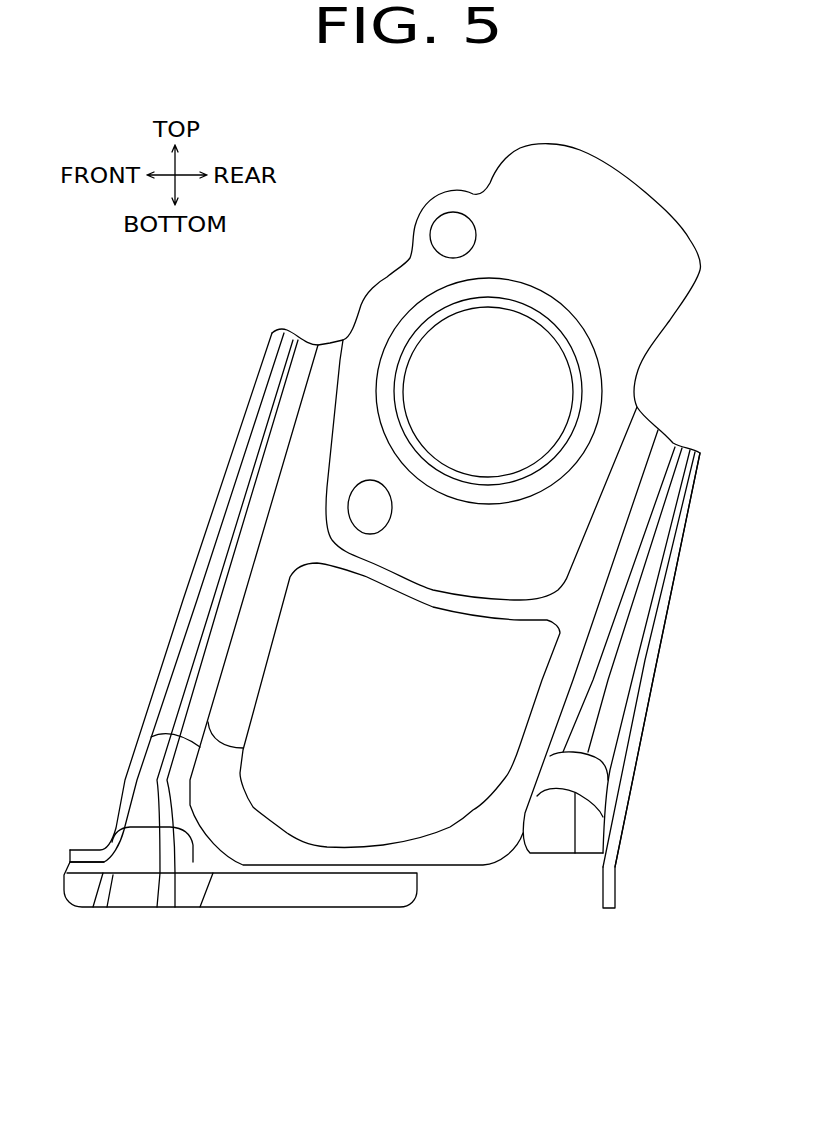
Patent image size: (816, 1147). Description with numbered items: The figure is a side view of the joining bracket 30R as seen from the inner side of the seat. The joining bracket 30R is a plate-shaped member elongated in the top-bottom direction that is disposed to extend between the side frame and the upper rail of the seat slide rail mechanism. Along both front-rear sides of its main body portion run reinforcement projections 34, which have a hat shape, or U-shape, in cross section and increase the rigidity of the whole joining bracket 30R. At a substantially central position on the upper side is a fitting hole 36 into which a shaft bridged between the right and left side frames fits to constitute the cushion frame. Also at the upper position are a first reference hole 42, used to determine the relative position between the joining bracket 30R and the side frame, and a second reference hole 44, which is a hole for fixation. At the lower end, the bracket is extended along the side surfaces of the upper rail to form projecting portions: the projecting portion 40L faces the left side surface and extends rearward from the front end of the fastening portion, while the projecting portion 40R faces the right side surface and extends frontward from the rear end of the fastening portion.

The joining bracket 30R is at (291, 496).
The reinforcement projection 34 is at (210, 547).
The fitting hole 36 is at (447, 324).
The first reference hole 42 is at (442, 226).
The second reference hole 44 is at (389, 524).
The projecting portion 40L is at (257, 890).
The projecting portion 40R is at (610, 890).